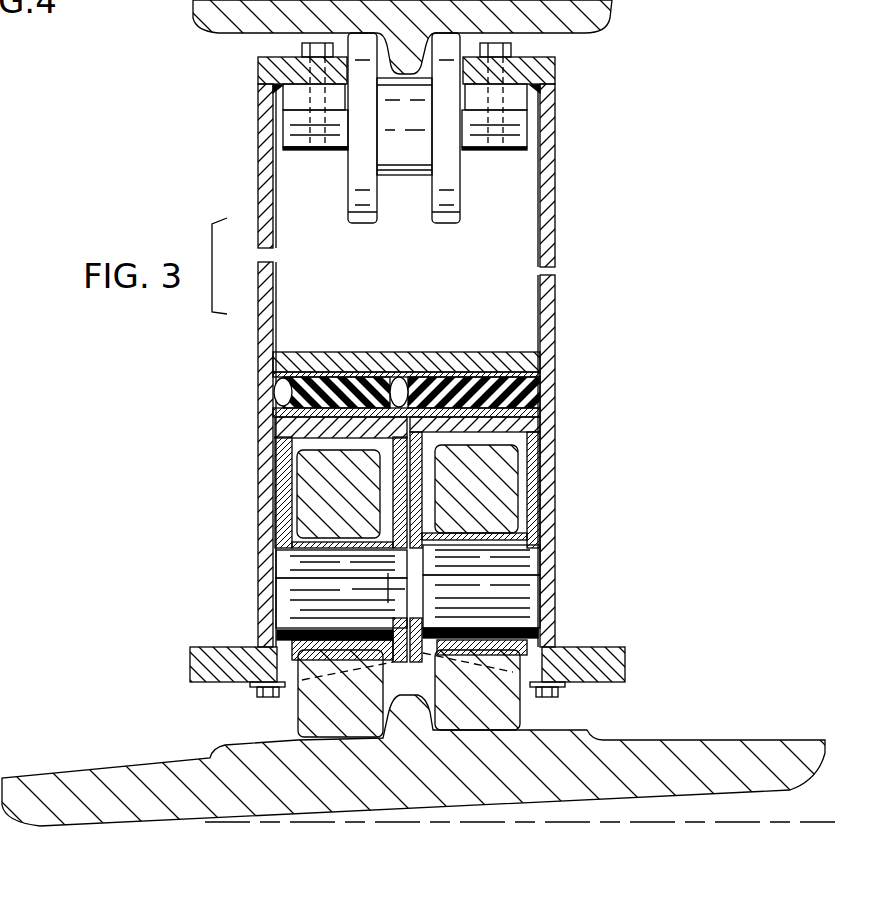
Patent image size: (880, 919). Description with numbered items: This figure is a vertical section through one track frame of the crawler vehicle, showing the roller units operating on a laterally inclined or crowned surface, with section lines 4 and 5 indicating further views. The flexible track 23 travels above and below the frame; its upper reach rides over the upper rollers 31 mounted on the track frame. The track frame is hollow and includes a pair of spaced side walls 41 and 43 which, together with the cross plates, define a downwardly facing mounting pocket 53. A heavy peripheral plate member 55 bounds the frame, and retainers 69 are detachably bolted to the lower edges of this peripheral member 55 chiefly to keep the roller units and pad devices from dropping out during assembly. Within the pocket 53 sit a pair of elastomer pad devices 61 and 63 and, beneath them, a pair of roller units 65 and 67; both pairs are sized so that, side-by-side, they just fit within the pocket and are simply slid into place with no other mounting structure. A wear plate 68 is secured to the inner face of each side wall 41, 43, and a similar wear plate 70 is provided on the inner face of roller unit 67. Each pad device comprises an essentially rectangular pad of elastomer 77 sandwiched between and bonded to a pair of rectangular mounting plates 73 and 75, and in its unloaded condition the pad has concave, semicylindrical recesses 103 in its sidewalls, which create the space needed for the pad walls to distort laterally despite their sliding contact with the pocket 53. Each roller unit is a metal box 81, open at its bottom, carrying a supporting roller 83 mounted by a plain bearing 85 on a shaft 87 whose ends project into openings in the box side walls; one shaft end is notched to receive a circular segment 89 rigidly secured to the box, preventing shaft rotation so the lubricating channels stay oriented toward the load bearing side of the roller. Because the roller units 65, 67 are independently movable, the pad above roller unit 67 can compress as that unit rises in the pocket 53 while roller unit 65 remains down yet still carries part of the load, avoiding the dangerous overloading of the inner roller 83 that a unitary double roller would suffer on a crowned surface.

The section line 4- 4 is at (350, 318).
The section line 5- 5 is at (478, 320).
The flexible track 23 is at (735, 740).
The upper rollers 31 is at (352, 165).
The side wall 41 is at (258, 137).
The side wall 43 is at (556, 175).
The mounting pocket 53 is at (273, 412).
The peripheral plate member 55 is at (265, 68).
The elastomer pad device 61 is at (323, 368).
The elastomer pad device 63 is at (448, 385).
The roller unit 65 is at (280, 531).
The roller unit 67 is at (538, 513).
The wear plate 68 is at (270, 512).
The retainers 69 is at (252, 689).
The wear plate 70 is at (407, 669).
The mounting plate 73 is at (334, 383).
The mounting plate 75 is at (360, 392).
The pad of elastomer 77 is at (295, 386).
The metal box 81 is at (287, 473).
The supporting roller 83 is at (308, 705).
The plain bearing 85 is at (318, 545).
The shaft 87 is at (298, 588).
The circular segment 89 is at (393, 628).
The concave semicylindrical recesses 103 is at (278, 389).